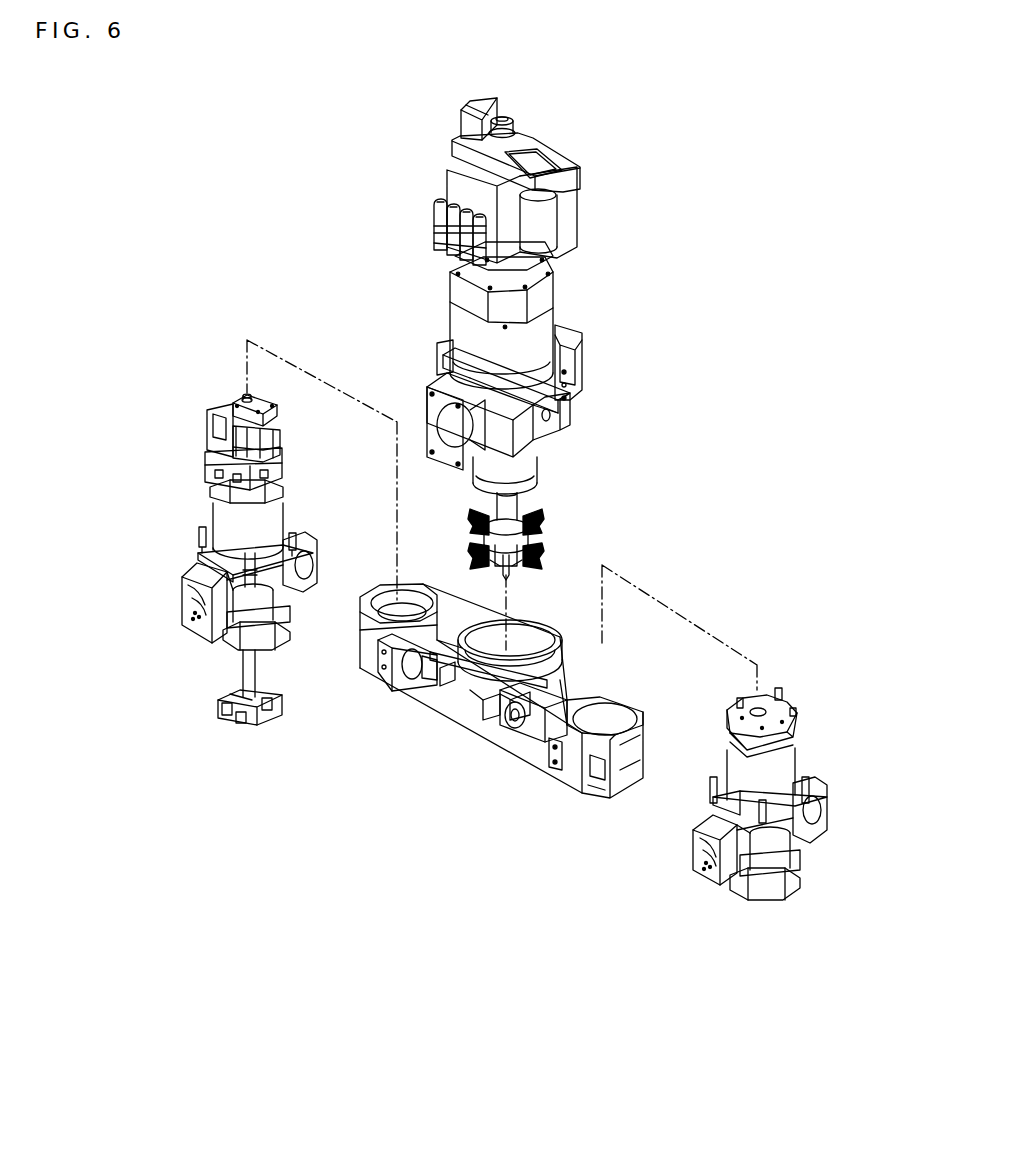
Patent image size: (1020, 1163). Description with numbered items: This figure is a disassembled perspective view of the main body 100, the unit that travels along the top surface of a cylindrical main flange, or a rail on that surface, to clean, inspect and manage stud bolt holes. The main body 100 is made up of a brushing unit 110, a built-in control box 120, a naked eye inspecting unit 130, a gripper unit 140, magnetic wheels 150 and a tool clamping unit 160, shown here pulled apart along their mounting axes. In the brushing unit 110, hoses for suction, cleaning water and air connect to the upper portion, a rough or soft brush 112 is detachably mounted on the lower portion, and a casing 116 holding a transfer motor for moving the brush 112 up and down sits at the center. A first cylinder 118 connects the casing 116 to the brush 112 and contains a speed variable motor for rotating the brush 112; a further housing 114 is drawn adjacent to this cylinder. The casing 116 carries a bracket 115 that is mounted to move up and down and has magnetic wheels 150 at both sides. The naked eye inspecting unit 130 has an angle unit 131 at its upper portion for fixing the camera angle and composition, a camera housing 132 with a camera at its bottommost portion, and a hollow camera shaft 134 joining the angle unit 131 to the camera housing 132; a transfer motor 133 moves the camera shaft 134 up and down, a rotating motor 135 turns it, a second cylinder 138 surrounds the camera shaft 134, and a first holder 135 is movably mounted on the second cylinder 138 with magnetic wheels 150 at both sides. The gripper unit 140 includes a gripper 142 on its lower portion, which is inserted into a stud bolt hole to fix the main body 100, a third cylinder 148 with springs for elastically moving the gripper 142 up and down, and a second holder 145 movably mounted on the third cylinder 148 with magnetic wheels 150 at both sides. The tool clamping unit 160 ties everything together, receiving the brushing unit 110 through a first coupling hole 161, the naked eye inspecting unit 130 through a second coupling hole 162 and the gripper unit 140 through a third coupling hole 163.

The main body 100 is at (227, 128).
The brushing unit 110 is at (584, 303).
The brush 112 is at (543, 543).
The motor mount box 114 is at (556, 425).
The bracket 115 is at (436, 384).
The casing 116 is at (540, 349).
The first cylinder 118 is at (525, 471).
The built-in control box 120 is at (565, 205).
The naked eye inspecting unit 130 is at (204, 428).
The angle unit 131 is at (268, 405).
The camera housing 132 is at (270, 712).
The transfer motor 133 is at (233, 398).
The camera shaft 134 is at (243, 669).
The first holder 135 is at (272, 440).
The second cylinder 138 is at (230, 513).
The gripper unit 140 is at (805, 688).
The gripper 142 is at (790, 893).
The second holder 145 is at (822, 834).
The third cylinder 148 is at (787, 762).
The magnetic wheels 150 is at (420, 428).
The tool clamping unit 160 is at (521, 764).
The first coupling hole 161 is at (478, 668).
The second coupling hole 162 is at (385, 615).
The third coupling hole 163 is at (555, 772).